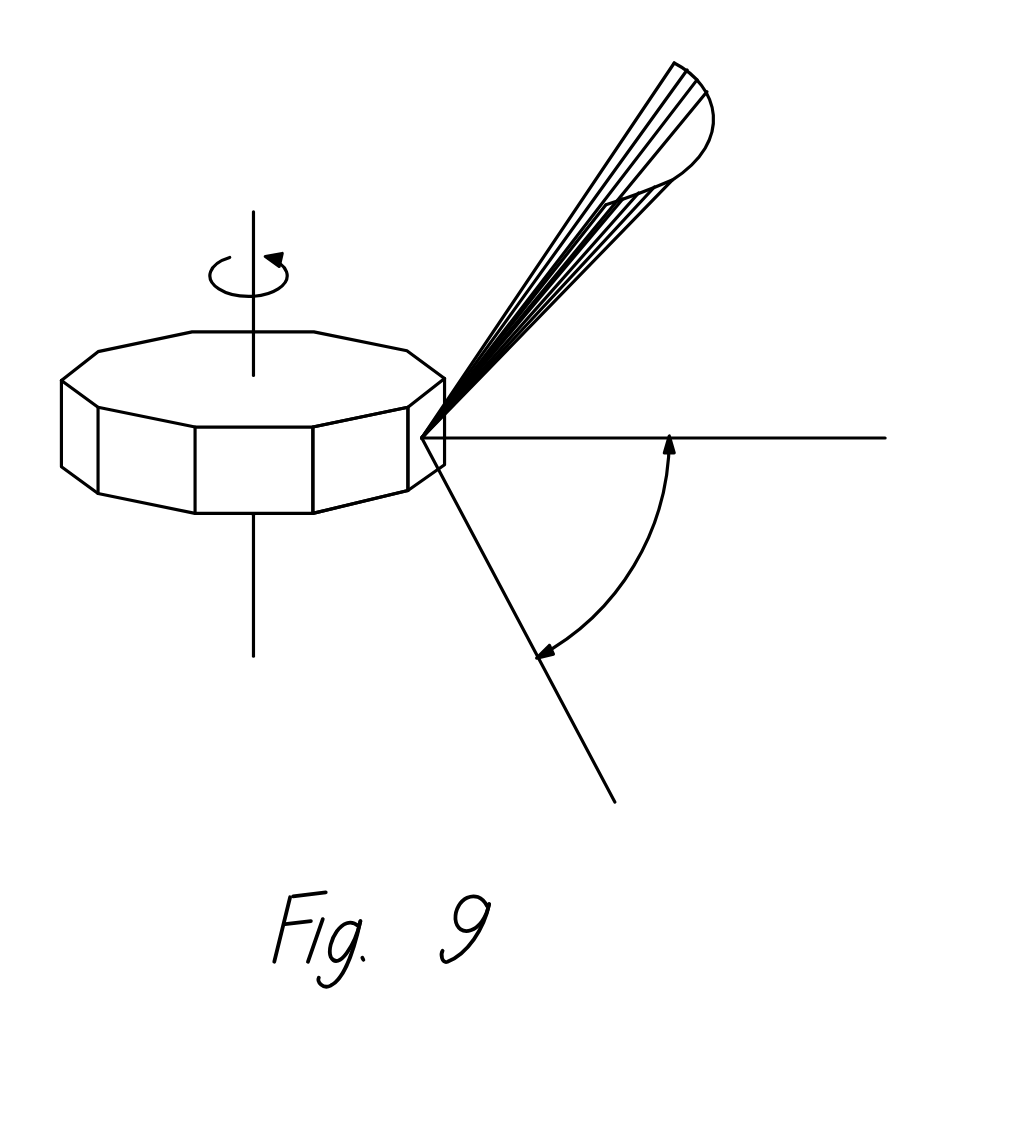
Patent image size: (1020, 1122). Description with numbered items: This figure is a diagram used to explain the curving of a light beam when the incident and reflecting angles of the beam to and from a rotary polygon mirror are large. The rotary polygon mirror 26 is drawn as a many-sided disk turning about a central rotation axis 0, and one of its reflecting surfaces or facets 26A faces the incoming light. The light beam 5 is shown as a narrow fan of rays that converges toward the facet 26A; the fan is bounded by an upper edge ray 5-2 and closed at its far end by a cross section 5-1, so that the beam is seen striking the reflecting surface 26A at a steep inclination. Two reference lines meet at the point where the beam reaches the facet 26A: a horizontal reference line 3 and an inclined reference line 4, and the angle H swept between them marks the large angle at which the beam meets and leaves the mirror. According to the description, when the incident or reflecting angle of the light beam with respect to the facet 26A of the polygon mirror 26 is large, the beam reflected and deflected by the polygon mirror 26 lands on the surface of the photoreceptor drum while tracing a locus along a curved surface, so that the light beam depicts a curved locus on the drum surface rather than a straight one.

The rotation axis 0 is at (252, 237).
The polygon mirror 26 is at (142, 370).
The reflecting surface or facet 26A is at (373, 488).
The light beam 5 is at (614, 228).
The beam cross section 5-1 is at (717, 137).
The beam upper edge ray 5-2 is at (694, 72).
The horizontal reference line 3 is at (837, 438).
The inclined reference line 4 is at (590, 762).
The angle H is at (638, 568).